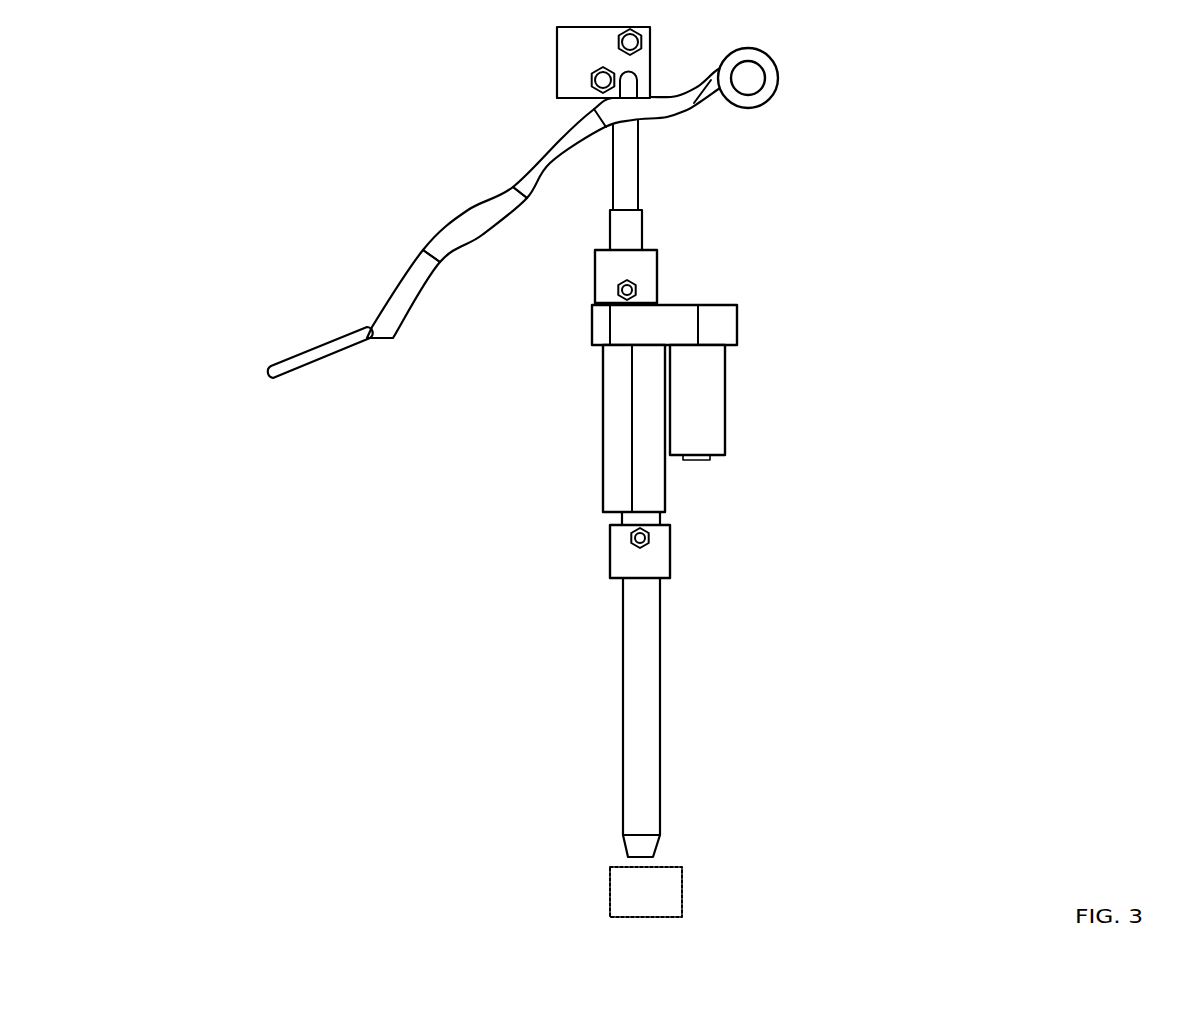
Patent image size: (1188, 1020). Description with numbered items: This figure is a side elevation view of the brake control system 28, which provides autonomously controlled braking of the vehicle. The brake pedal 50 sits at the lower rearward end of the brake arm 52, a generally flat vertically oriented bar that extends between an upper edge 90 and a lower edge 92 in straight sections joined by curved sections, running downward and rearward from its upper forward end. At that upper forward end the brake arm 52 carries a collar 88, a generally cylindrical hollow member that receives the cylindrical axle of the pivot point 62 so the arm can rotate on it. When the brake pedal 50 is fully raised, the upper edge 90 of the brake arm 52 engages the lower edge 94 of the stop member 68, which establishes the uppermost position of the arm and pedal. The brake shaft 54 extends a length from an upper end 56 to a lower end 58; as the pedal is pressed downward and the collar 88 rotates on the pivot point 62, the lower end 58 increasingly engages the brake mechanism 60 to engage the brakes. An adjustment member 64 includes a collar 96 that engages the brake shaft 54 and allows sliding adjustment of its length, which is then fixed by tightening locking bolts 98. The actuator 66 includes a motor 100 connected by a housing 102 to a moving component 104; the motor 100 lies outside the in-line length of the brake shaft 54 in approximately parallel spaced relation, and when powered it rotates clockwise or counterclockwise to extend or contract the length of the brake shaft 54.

The brake control system 28 is at (233, 100).
The brake pedal 50 is at (293, 357).
The brake arm 52 is at (396, 292).
The brake shaft 54 is at (664, 703).
The upper end 56 is at (641, 121).
The lower end 58 is at (655, 855).
The brake mechanism 60 is at (682, 898).
The pivot point 62 is at (749, 78).
The adjustment member 64 is at (661, 258).
The actuator 66 is at (597, 426).
The stop member 68 is at (553, 25).
The collar 88 is at (748, 48).
The upper edge 90 is at (468, 212).
The lower edge 92 is at (482, 236).
The lower edge 94 is at (558, 99).
The collar 96 is at (648, 251).
The locking bolt 98 is at (635, 289).
The motor 100 is at (720, 412).
The housing 102 is at (738, 321).
The moving component 104 is at (622, 475).